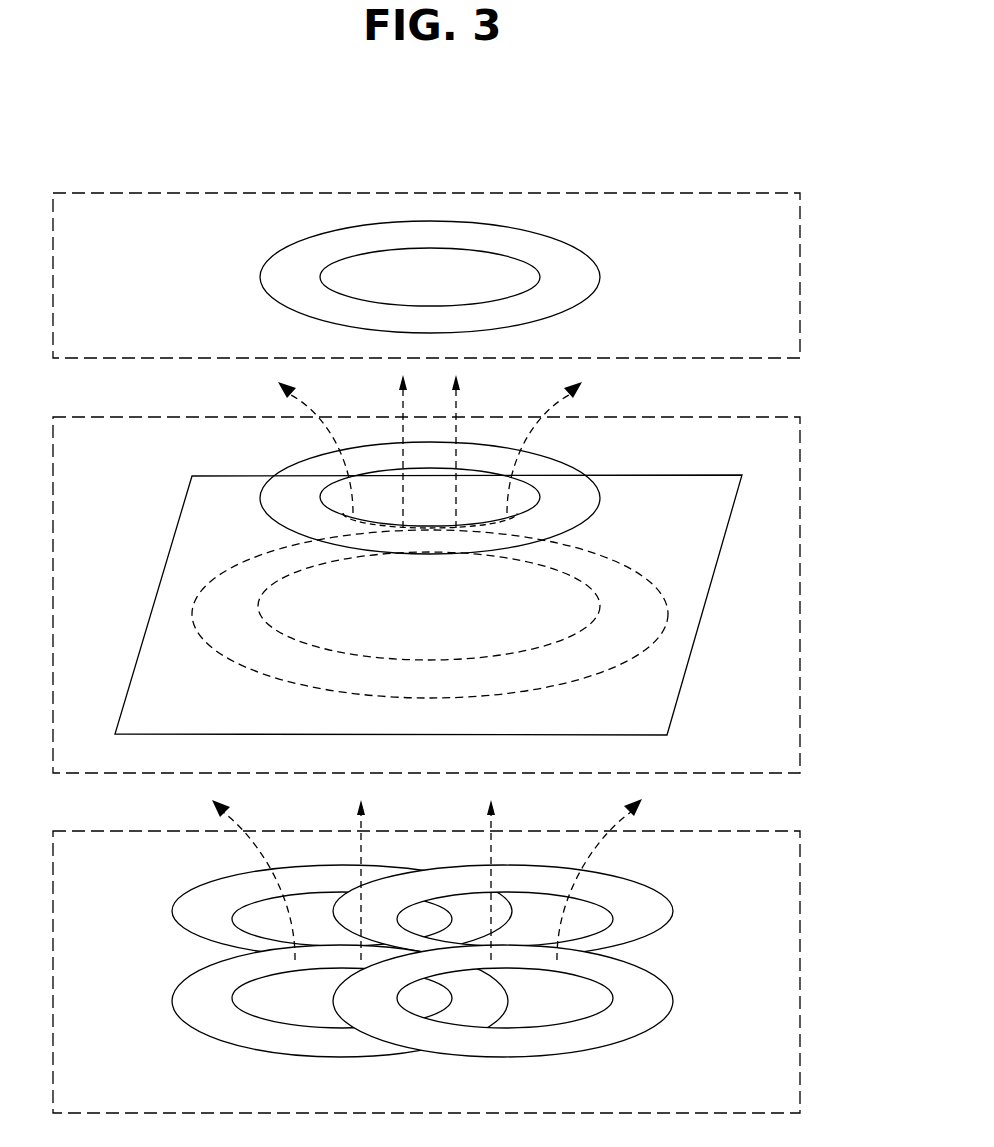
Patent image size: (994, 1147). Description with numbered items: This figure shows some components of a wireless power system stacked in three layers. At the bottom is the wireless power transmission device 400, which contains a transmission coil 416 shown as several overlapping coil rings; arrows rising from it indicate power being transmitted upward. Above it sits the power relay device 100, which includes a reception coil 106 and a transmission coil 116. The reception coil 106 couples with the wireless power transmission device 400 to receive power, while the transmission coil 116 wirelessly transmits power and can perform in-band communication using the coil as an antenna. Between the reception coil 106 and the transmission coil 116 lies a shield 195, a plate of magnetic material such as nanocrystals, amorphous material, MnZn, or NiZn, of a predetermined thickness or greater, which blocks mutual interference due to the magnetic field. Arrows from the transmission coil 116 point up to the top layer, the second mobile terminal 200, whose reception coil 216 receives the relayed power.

The second mobile terminal 200 is at (800, 250).
The reception coil 216 is at (556, 257).
The power relay device 100 is at (800, 476).
The transmission coil 116 is at (554, 477).
The reception coil 106 is at (632, 588).
The shield 195 is at (173, 650).
The wireless power transmission device 400 is at (800, 893).
The transmission coil 416 is at (652, 925).